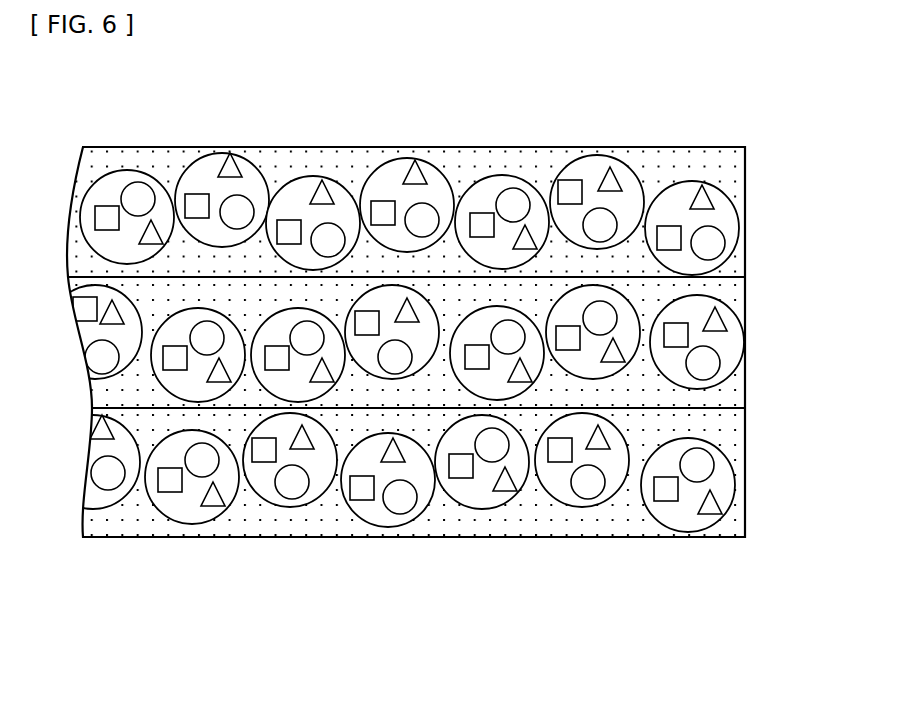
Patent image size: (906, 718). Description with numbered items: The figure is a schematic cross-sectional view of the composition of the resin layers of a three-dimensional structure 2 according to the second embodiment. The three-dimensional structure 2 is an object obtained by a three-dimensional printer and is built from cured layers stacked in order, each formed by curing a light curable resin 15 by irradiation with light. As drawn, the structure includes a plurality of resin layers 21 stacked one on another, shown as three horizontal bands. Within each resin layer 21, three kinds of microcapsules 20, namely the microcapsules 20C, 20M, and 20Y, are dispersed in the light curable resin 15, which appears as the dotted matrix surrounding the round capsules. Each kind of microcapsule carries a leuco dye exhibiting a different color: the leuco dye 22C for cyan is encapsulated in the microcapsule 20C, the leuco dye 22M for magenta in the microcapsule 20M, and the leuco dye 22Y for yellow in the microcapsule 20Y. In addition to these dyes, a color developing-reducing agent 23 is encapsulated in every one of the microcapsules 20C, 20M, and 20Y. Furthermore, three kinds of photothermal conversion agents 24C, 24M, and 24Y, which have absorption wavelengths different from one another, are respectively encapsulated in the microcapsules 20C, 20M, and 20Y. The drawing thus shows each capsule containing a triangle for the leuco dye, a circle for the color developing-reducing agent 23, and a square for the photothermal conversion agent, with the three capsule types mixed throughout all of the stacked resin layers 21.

The three-dimensional structure 2 is at (423, 387).
The light curable resin 15 is at (117, 511).
The microcapsules 20 is at (395, 424).
The microcapsule 20C is at (270, 601).
The microcapsule 20M is at (457, 601).
The microcapsule 20Y is at (643, 601).
The resin layer 21 is at (738, 177).
The leuco dye 22C is at (213, 500).
The leuco dye 22M is at (407, 318).
The leuco dye 22Y is at (608, 182).
The color developing-reducing agent 23 is at (204, 460).
The photothermal conversion agent 24C is at (172, 484).
The photothermal conversion agent 24M is at (367, 323).
The photothermal conversion agent 24Y is at (573, 190).